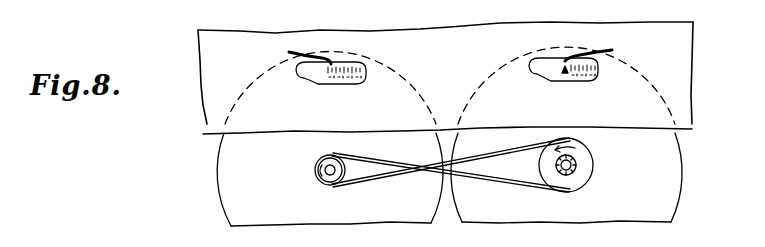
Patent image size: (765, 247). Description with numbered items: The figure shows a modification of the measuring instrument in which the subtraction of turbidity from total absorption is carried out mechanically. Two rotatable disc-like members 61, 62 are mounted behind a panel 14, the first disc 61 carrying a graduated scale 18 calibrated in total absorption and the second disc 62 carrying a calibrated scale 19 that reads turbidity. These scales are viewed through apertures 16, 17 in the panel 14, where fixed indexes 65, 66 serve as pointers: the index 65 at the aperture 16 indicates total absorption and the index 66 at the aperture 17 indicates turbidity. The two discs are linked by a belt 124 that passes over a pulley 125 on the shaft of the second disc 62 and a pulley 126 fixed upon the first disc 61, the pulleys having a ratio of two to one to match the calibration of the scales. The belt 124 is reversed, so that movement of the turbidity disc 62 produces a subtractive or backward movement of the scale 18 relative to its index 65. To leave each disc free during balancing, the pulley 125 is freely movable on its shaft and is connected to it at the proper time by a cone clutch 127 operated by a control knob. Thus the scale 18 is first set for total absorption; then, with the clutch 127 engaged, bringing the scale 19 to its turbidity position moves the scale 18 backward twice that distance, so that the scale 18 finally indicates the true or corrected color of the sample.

The panel 14 is at (448, 35).
The aperture 16 is at (301, 79).
The aperture 17 is at (534, 77).
The graduated scale 18 is at (318, 78).
The calibrated scale 19 is at (565, 74).
The disc-like member 61 is at (233, 190).
The disc-like member 62 is at (512, 210).
The fixed index 65 is at (298, 54).
The fixed index 66 is at (599, 52).
The belt 124 is at (510, 145).
The pulley 125 is at (587, 165).
The pulley 126 is at (323, 178).
The cone clutch 127 is at (572, 173).